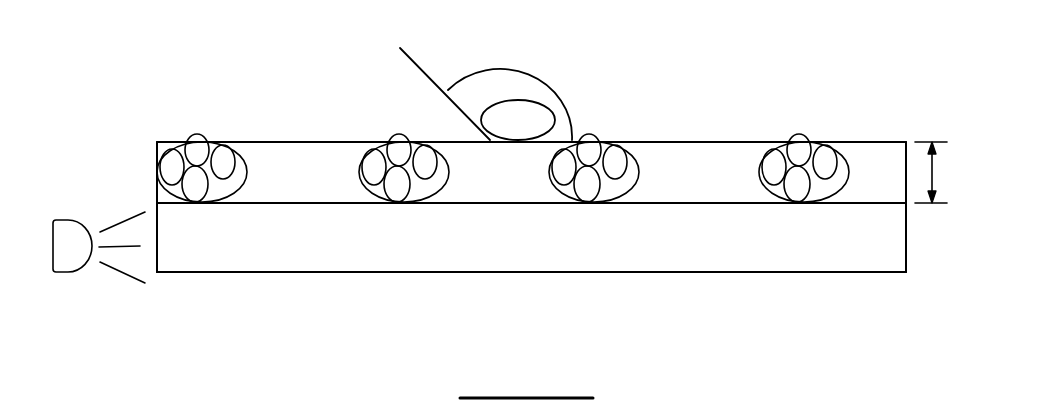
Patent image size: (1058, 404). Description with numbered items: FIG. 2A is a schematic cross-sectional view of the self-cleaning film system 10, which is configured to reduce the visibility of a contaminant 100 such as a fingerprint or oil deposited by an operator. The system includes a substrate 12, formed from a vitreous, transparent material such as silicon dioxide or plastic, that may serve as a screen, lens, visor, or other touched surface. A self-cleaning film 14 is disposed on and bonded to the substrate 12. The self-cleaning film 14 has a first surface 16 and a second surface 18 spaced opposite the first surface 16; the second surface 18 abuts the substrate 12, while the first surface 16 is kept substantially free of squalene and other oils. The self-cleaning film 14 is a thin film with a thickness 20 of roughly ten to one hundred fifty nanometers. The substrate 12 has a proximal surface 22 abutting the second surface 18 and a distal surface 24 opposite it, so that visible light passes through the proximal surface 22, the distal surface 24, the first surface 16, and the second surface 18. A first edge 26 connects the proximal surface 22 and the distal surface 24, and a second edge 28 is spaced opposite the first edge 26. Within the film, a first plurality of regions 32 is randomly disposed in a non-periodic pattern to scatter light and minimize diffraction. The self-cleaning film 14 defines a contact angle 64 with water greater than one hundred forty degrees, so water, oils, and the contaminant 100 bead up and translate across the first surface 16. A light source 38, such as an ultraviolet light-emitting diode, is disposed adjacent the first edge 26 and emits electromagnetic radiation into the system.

The self-cleaning film system 10 is at (114, 152).
The substrate 12 is at (725, 272).
The self-cleaning film 14 is at (862, 101).
The first surface 16 is at (721, 142).
The second surface 18 is at (455, 203).
The thickness 20 is at (938, 172).
The proximal surface 22 is at (300, 203).
The distal surface 24 is at (392, 272).
The first edge 26 is at (157, 235).
The second edge 28 is at (906, 235).
The first plurality of regions 32 is at (384, 118).
The light source 38 is at (62, 220).
The contact angle 64 is at (510, 73).
The contaminant 100 is at (537, 120).